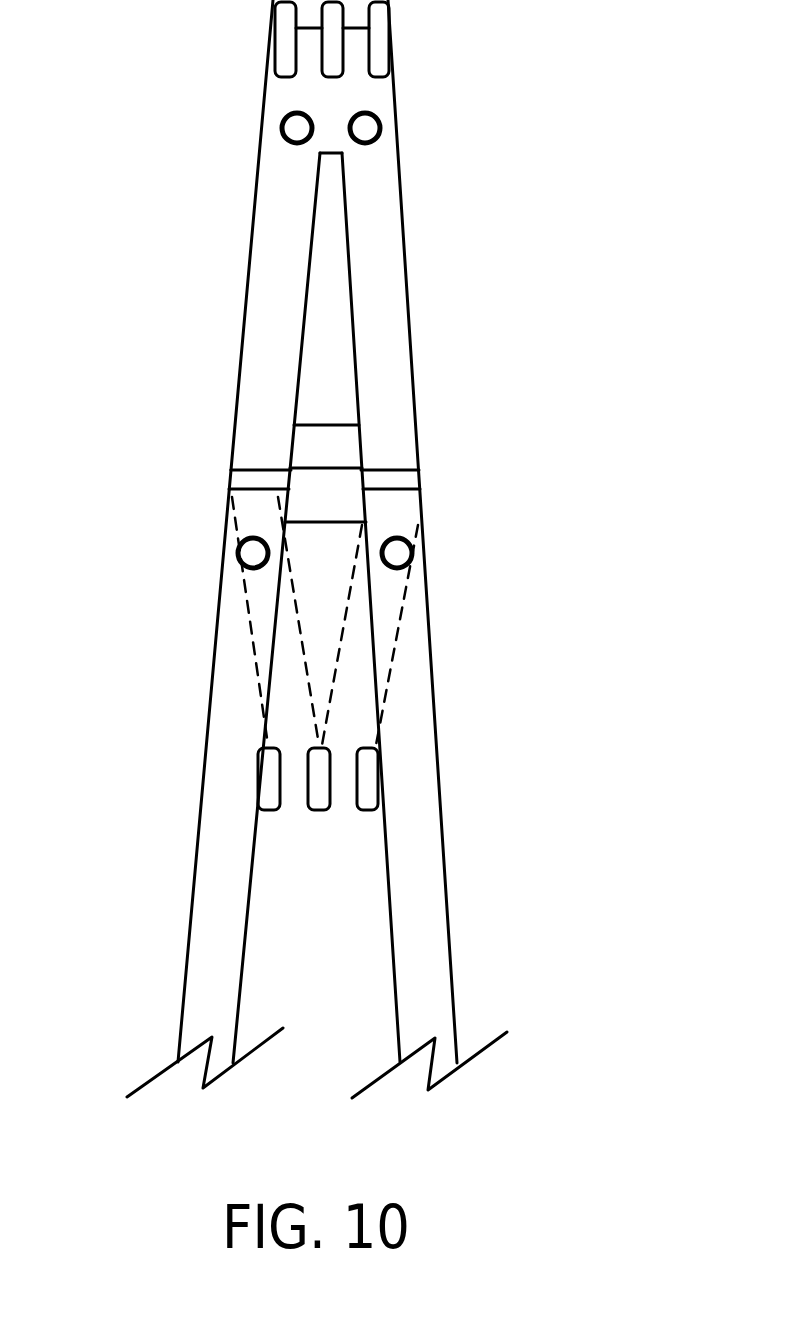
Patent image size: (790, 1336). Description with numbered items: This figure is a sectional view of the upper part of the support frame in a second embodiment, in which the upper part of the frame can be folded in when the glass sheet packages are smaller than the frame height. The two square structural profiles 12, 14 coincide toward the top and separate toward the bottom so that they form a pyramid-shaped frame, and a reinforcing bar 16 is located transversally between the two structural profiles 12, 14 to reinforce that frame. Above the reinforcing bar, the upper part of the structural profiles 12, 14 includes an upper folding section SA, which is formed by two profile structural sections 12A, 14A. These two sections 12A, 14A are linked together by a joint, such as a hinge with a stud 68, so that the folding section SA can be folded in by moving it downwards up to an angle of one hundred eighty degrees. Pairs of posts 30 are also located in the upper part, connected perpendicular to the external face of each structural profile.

The upper folding section SA is at (467, 267).
The profile structural section 12A is at (285, 307).
The profile structural section 14A is at (372, 312).
The structural profile 12 is at (245, 702).
The structural profile 14 is at (398, 703).
The reinforcing bar 16 is at (325, 500).
The stud 68 is at (397, 479).
The posts 30 is at (280, 130).